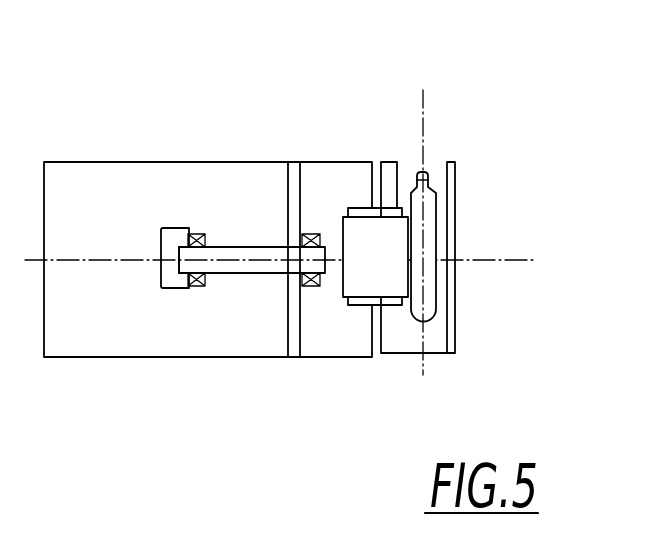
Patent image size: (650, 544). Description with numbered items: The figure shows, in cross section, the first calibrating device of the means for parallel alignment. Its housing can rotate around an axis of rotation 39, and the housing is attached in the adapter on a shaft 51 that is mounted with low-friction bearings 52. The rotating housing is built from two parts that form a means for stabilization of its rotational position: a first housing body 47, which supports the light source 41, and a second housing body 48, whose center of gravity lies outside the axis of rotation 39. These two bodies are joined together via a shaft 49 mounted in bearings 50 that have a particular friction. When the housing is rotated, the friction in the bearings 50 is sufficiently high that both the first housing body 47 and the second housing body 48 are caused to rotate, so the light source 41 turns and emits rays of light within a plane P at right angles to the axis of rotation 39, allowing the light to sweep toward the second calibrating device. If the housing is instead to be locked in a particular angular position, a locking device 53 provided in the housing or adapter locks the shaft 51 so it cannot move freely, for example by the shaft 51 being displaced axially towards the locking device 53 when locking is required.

The axis of rotation 39 is at (472, 260).
The light source 41 is at (428, 207).
The first housing body 47 is at (392, 172).
The second housing body 48 is at (318, 190).
The shaft 49 is at (388, 240).
The bearings 50 is at (357, 306).
The shaft 51 is at (232, 247).
The low-friction bearings 52 is at (308, 286).
The locking device 53 is at (172, 288).
The plane P is at (423, 110).